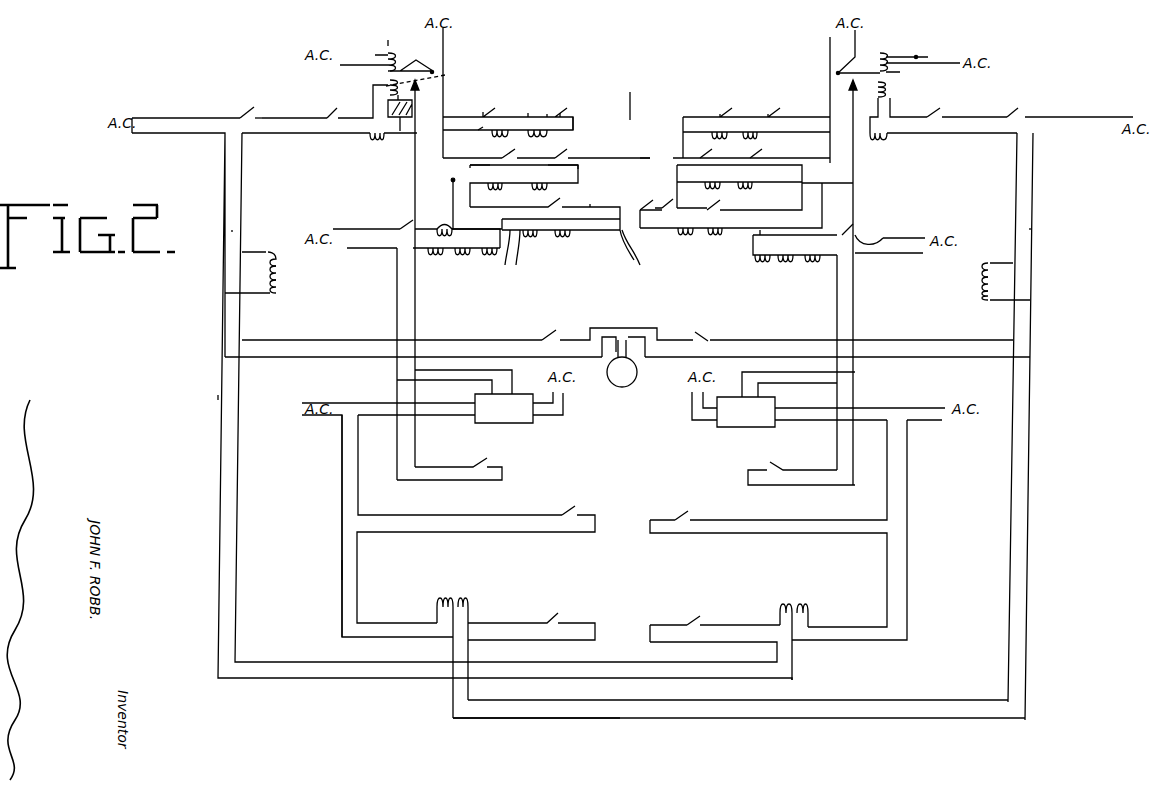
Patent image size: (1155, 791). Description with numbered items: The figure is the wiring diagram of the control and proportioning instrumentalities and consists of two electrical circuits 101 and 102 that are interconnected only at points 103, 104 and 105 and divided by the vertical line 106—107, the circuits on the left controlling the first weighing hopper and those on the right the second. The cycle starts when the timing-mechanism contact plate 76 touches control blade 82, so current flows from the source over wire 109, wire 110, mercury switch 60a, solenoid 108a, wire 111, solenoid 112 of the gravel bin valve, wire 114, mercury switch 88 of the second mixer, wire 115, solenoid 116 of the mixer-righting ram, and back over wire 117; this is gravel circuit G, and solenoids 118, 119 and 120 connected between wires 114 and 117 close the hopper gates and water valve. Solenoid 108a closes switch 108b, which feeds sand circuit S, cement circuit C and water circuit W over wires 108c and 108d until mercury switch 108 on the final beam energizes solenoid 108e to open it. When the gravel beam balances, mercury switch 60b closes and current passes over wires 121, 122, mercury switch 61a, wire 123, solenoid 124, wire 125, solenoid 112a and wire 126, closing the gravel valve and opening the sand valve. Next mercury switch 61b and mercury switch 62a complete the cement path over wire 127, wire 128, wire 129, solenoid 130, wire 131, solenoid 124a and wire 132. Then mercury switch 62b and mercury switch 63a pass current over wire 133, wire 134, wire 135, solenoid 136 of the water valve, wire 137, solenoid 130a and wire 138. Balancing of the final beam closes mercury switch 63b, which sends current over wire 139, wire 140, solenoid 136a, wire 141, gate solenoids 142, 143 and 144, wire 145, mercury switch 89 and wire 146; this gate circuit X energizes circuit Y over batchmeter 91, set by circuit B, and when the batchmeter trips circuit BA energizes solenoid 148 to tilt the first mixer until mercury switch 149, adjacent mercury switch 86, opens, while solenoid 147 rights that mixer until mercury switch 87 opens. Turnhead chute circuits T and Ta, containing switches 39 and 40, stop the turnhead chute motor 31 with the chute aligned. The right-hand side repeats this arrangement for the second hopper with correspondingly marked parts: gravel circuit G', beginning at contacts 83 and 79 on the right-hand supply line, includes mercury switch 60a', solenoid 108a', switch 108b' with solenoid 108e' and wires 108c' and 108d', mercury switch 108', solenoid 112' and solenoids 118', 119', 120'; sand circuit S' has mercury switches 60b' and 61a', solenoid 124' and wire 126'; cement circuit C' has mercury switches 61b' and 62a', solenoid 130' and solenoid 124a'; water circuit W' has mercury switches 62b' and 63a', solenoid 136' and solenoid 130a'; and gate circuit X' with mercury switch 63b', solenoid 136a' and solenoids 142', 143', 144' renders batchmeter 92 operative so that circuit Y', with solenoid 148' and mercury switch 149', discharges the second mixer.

The electrical circuit 101 is at (216, 395).
The electrical circuit 102 is at (1040, 376).
The interconnection point 104 is at (722, 701).
The interconnection point 105 is at (530, 718).
The vertical line 107 is at (620, 730).
The wire 114 is at (282, 133).
The wire 117 is at (165, 133).
The wire 109 is at (182, 118).
The contact plate 76 is at (247, 110).
The control blade 82 is at (260, 114).
The wire 110 is at (304, 118).
The mercury switch 60a is at (356, 100).
The mercury switch 108 is at (368, 48).
The solenoid 108a is at (468, 64).
The switch 108b is at (445, 53).
The wire 108c is at (439, 86).
The wire 108d is at (382, 273).
The solenoid 108e is at (402, 30).
The wire 111 is at (404, 114).
The solenoid 112 is at (329, 148).
The sand circuit S is at (520, 93).
The wire 121 is at (484, 114).
The wire 122 is at (530, 115).
The mercury switch 61a is at (587, 93).
The mercury switch 60b is at (531, 92).
The vertical line 106 is at (633, 92).
The wire 123 is at (578, 125).
The solenoid 124 is at (561, 135).
The wire 125 is at (519, 124).
The wire 126 is at (471, 135).
The solenoid 112a is at (472, 150).
The mercury switch 61b is at (528, 147).
The mercury switch 62a is at (602, 148).
The cement circuit C is at (651, 159).
The wire 127 is at (470, 168).
The wire 128 is at (524, 184).
The wire 129 is at (580, 170).
The solenoid 130 is at (560, 173).
The wire 131 is at (493, 195).
The wire 132 is at (487, 173).
The wire 133 is at (532, 195).
The wire 134 is at (590, 205).
The mercury switch 62b is at (545, 208).
The mercury switch 63a is at (653, 203).
The solenoid 124a is at (436, 203).
The wire 139 is at (350, 229).
The mercury switch 63b is at (391, 214).
The solenoid 136a is at (428, 213).
The wire 140 is at (437, 235).
The wire 141 is at (488, 215).
The water circuit W is at (571, 252).
The solenoid 136 is at (581, 244).
The wire 137 is at (533, 237).
The wire 135 is at (643, 245).
The solenoid 130a is at (530, 254).
The wire 138 is at (518, 280).
The solenoid 142 is at (491, 276).
The solenoid 143 is at (423, 267).
The solenoid 144 is at (438, 276).
The solenoid 118 is at (276, 288).
The solenoid 119 is at (298, 273).
The solenoid 120 is at (284, 258).
The gate circuit X is at (384, 364).
The wire 146 is at (355, 250).
The turnhead chute circuit Ta is at (340, 342).
The wire 145 is at (416, 322).
The switch 40 is at (552, 340).
The interconnection point 103 is at (623, 330).
The switch 39 is at (710, 339).
The turnhead chute circuit T is at (897, 340).
The motor 31 is at (630, 382).
The electric circuit B is at (502, 386).
The batchmeter 91 is at (520, 424).
The mercury switch 89 is at (478, 462).
The circuit Y is at (358, 526).
The mercury switch 149 is at (476, 553).
The solenoid 148 is at (432, 642).
The solenoid 147 is at (472, 596).
The mercury switch 87 is at (556, 616).
The circuit BA is at (342, 573).
The batchmeter 92 is at (744, 428).
The gate circuit X' is at (818, 362).
The mercury switch 86 is at (775, 466).
The circuit Y' is at (867, 530).
The mercury switch 149' is at (768, 523).
The solenoid 148' is at (828, 609).
The solenoid 116 is at (788, 598).
The wire 115 is at (752, 624).
The mercury switch 88 is at (693, 618).
The solenoid 142' is at (754, 276).
The solenoid 143' is at (794, 276).
The solenoid 144' is at (795, 255).
The mercury switch 63b' is at (864, 217).
The solenoid 136a' is at (892, 231).
The wire 108d' is at (886, 282).
The solenoid 118' is at (979, 293).
The solenoid 119' is at (958, 280).
The solenoid 120' is at (970, 266).
The sand circuit S' is at (756, 100).
The mercury switch 61a' is at (720, 100).
The mercury switch 60b' is at (767, 100).
The solenoid 124' is at (701, 142).
The wire 126' is at (768, 142).
The cement circuit C' is at (751, 160).
The mercury switch 62a' is at (696, 157).
The mercury switch 61b' is at (755, 158).
The solenoid 130' is at (739, 186).
The solenoid 124a' is at (768, 185).
The water circuit W' is at (786, 196).
The mercury switch 62b' is at (709, 198).
The mercury switch 63a' is at (669, 198).
The solenoid 136' is at (731, 222).
The solenoid 130a' is at (738, 254).
The wire 108c' is at (815, 52).
The switch 108b' is at (874, 51).
The mercury switch 108' is at (920, 50).
The solenoid 108e' is at (970, 44).
The solenoid 108a' is at (909, 104).
The solenoid 112' is at (941, 152).
The mercury switch 60a' is at (967, 97).
The contact 83 is at (1010, 116).
The switch 79 is at (1024, 117).
The gravel circuit G is at (213, 233).
The gravel circuit G' is at (1047, 217).